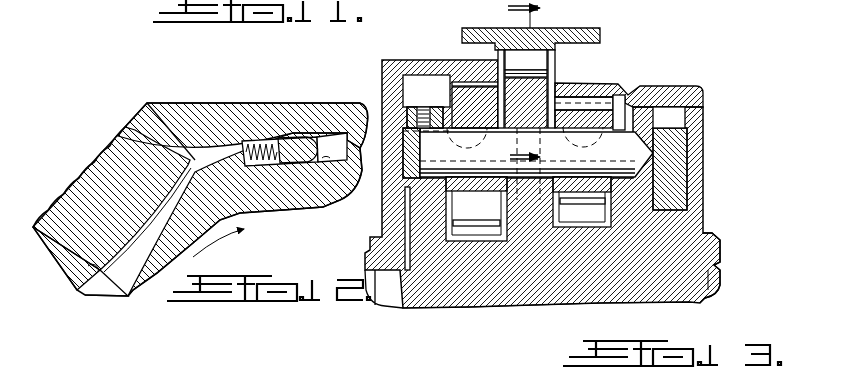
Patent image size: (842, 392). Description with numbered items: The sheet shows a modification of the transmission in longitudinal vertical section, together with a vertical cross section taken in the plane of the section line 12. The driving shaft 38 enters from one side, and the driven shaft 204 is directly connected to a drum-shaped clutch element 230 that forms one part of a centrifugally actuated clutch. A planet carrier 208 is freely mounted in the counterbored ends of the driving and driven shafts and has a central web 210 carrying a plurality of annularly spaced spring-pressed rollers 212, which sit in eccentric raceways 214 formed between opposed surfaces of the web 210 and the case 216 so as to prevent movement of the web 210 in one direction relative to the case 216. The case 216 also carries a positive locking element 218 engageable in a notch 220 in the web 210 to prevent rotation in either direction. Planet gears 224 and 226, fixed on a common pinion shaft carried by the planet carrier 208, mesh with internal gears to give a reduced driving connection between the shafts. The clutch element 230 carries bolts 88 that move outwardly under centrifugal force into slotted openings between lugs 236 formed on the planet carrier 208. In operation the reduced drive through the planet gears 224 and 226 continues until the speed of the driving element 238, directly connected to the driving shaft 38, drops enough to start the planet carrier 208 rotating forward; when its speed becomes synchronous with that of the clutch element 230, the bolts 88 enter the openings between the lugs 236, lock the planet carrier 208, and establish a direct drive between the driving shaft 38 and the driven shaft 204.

In FIG. 13, the section line 12— 12 is at (549, 85).
In FIG. 13, the driving shaft 38 is at (372, 303).
In FIG. 13, the bolts 88 is at (680, 153).
In FIG. 13, the driven shaft 204 is at (717, 257).
In FIG. 13, the planet carrier 208 is at (605, 301).
In FIG. 12, the central web 210 is at (130, 288).
In FIG. 13, the central web 210 is at (553, 80).
In FIG. 12, the spring-pressed rollers 212 is at (288, 137).
In FIG. 13, the spring-pressed rollers 212 is at (540, 65).
In FIG. 12, the eccentric raceways 214 is at (303, 200).
In FIG. 12, the case 216 is at (186, 113).
In FIG. 13, the case 216 is at (593, 28).
In FIG. 12, the positive locking element 218 is at (123, 133).
In FIG. 13, the positive locking element 218 is at (525, 212).
In FIG. 12, the notch 220 is at (82, 293).
In FIG. 13, the planet gear 224 is at (487, 132).
In FIG. 13, the planet gear 226 is at (595, 112).
In FIG. 13, the drum-shaped clutch element 230 is at (663, 88).
In FIG. 13, the lugs 236 is at (692, 100).
In FIG. 13, the driving element 238 is at (433, 38).